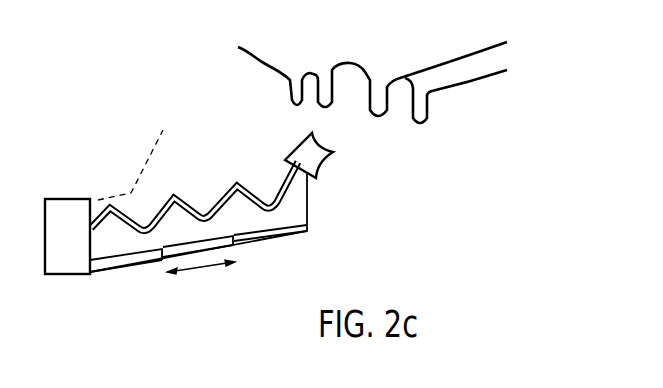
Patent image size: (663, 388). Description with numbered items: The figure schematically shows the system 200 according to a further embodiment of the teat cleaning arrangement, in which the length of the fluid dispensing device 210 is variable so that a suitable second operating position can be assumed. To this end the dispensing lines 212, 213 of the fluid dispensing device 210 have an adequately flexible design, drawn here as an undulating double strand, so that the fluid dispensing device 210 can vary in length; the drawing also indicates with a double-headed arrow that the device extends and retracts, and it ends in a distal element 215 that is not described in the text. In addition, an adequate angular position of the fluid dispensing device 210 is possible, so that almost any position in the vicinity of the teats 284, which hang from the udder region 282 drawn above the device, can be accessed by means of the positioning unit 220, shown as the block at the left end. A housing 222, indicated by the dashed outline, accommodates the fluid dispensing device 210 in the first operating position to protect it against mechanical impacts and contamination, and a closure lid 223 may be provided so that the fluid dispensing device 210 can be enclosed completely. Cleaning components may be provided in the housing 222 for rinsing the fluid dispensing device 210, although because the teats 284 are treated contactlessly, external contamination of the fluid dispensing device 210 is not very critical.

The system 200 is at (204, 167).
The fluid dispensing device 210 is at (243, 252).
The dispensing line 212 is at (195, 172).
The dispensing line 213 is at (262, 188).
The distal tip element 215 is at (318, 158).
The positioning unit 220 is at (62, 198).
The housing 222 is at (149, 165).
The closure lid 223 is at (155, 142).
The tissue wall 282 is at (412, 107).
The teats 284 is at (442, 112).